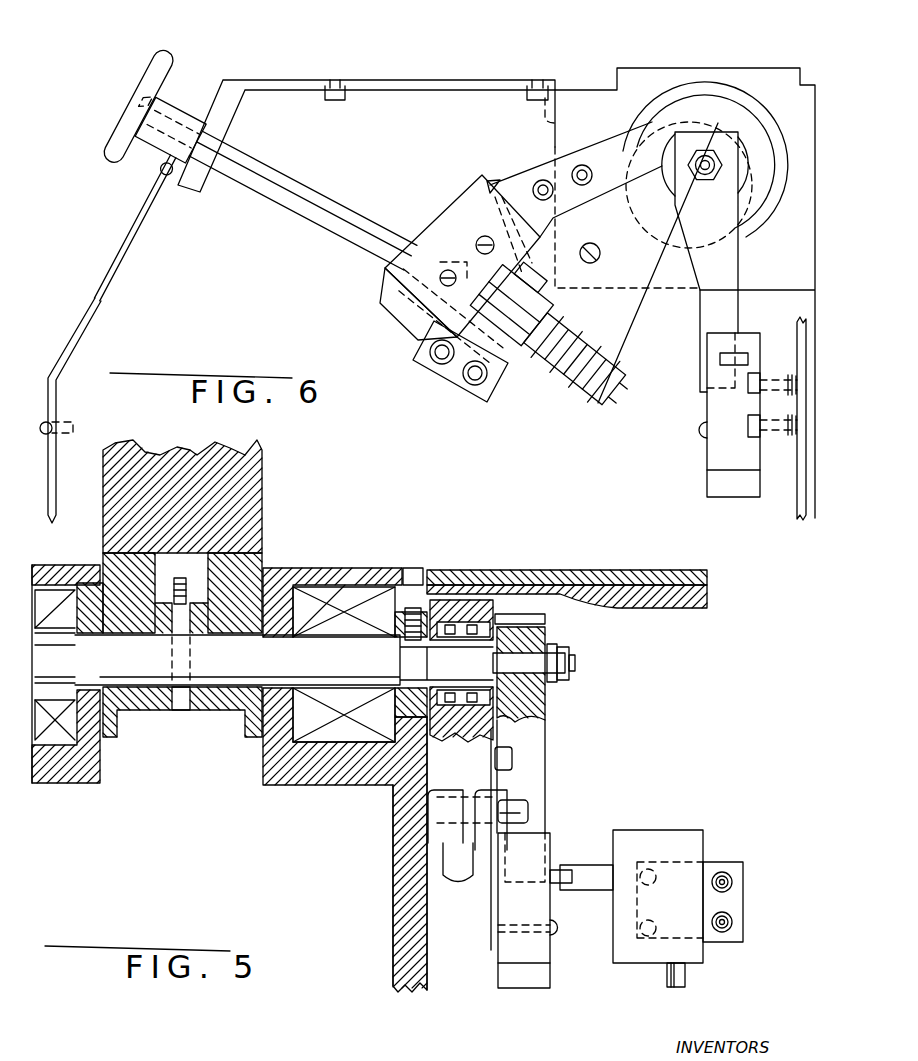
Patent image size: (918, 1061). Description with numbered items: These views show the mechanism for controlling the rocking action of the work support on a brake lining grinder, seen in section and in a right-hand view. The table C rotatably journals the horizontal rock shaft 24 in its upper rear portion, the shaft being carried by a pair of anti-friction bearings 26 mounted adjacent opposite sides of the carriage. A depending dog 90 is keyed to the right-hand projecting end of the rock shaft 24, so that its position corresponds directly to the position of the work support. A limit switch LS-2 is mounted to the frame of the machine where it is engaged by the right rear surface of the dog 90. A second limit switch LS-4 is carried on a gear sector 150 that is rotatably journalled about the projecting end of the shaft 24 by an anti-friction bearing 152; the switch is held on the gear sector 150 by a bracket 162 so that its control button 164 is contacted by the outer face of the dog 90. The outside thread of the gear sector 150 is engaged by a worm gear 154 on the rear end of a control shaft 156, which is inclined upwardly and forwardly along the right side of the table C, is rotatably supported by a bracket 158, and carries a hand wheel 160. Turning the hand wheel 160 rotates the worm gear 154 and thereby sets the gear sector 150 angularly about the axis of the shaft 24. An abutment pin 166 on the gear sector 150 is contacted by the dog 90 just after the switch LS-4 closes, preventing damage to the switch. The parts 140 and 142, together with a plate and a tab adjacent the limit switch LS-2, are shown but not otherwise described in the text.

In FIG. 6, the rock shaft 24 is at (717, 122).
In FIG. 5, the rock shaft 24 is at (250, 666).
In FIG. 5, the anti-friction bearings 26 is at (75, 565).
In FIG. 6, the dog 90 is at (737, 270).
In FIG. 5, the dog 90 is at (538, 775).
In FIG. 6, the frame plate 140 is at (800, 473).
In FIG. 6, the switch actuator tab 142 is at (742, 357).
In FIG. 6, the gear sector 150 is at (625, 261).
In FIG. 5, the gear sector 150 is at (505, 728).
In FIG. 5, the anti-friction bearing 152 is at (497, 620).
In FIG. 6, the worm gear 154 is at (570, 398).
In FIG. 6, the control shaft 156 is at (235, 147).
In FIG. 6, the bracket 158 is at (452, 375).
In FIG. 6, the hand wheel 160 is at (165, 43).
In FIG. 6, the bracket 162 is at (527, 173).
In FIG. 6, the control button 164 is at (548, 312).
In FIG. 6, the abutment pin 166 is at (598, 225).
In FIG. 6, the limit switch LS-2 is at (704, 483).
In FIG. 5, the limit switch LS-2 is at (663, 826).
In FIG. 6, the limit switch LS-4 is at (455, 190).
In FIG. 5, the limit switch LS-4 is at (523, 992).
In FIG. 5, the table C is at (390, 888).